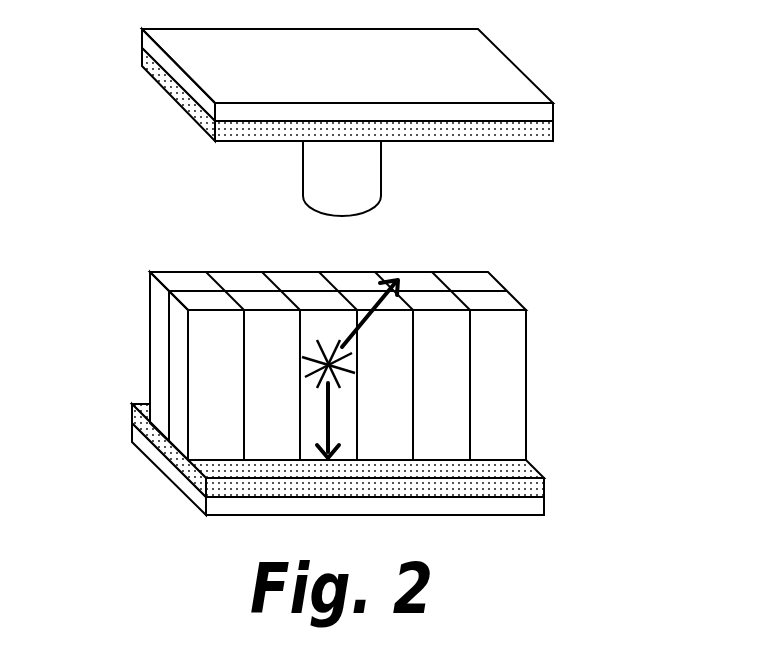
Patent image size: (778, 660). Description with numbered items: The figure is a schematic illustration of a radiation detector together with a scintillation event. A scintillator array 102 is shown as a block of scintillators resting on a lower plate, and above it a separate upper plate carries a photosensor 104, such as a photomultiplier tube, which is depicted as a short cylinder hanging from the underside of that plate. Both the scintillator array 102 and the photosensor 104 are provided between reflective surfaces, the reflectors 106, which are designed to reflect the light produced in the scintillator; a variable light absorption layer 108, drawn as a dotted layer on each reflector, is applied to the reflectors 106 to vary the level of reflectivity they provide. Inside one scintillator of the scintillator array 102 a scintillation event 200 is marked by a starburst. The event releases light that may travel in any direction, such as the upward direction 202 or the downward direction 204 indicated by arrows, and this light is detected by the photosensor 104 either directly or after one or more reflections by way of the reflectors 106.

The scintillator array 102 is at (160, 290).
The photosensor 104 is at (303, 178).
The reflectors 106 is at (553, 110).
The variable light absorption layer 108 is at (553, 131).
The scintillation event 200 is at (307, 365).
The direction 202 is at (390, 296).
The direction 204 is at (330, 427).